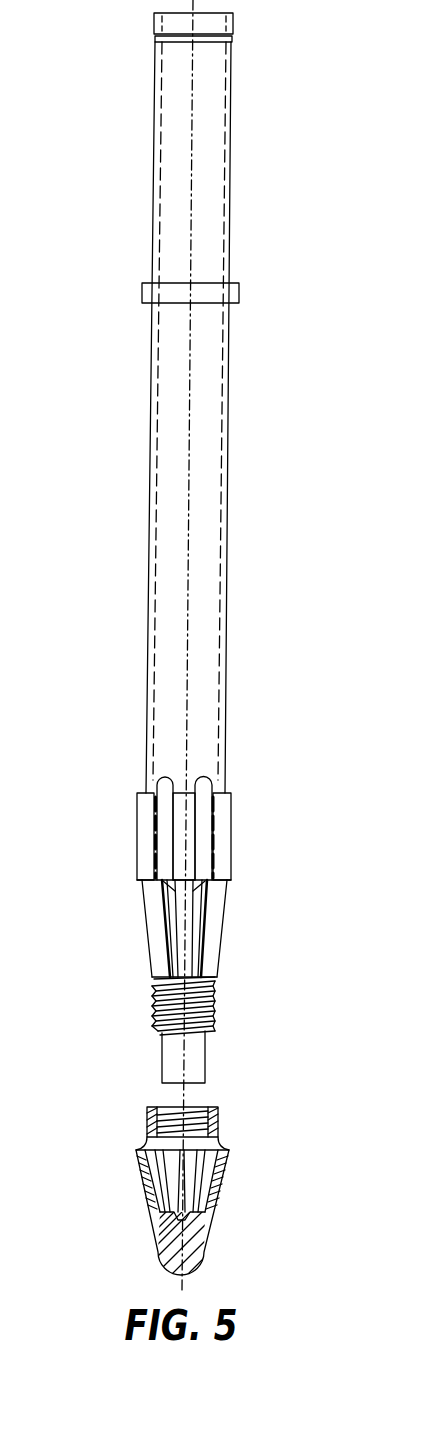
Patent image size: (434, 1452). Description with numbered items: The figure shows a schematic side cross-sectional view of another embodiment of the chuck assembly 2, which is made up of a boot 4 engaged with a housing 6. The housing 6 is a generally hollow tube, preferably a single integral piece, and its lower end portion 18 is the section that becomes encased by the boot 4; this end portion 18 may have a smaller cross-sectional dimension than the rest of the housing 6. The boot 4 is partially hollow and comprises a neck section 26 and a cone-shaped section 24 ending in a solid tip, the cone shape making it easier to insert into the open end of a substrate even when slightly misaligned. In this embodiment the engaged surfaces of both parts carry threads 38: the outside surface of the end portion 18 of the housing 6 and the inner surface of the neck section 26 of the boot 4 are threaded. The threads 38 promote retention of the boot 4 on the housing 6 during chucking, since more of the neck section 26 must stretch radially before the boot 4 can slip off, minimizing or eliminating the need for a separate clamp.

The chuck assembly 2 is at (68, 783).
The housing 6 is at (231, 462).
The threads 38 is at (216, 1008).
The end portion 18 is at (162, 1048).
The neck section 26 is at (148, 1122).
The cone-shaped section 24 is at (216, 1228).
The boot 4 is at (189, 1181).